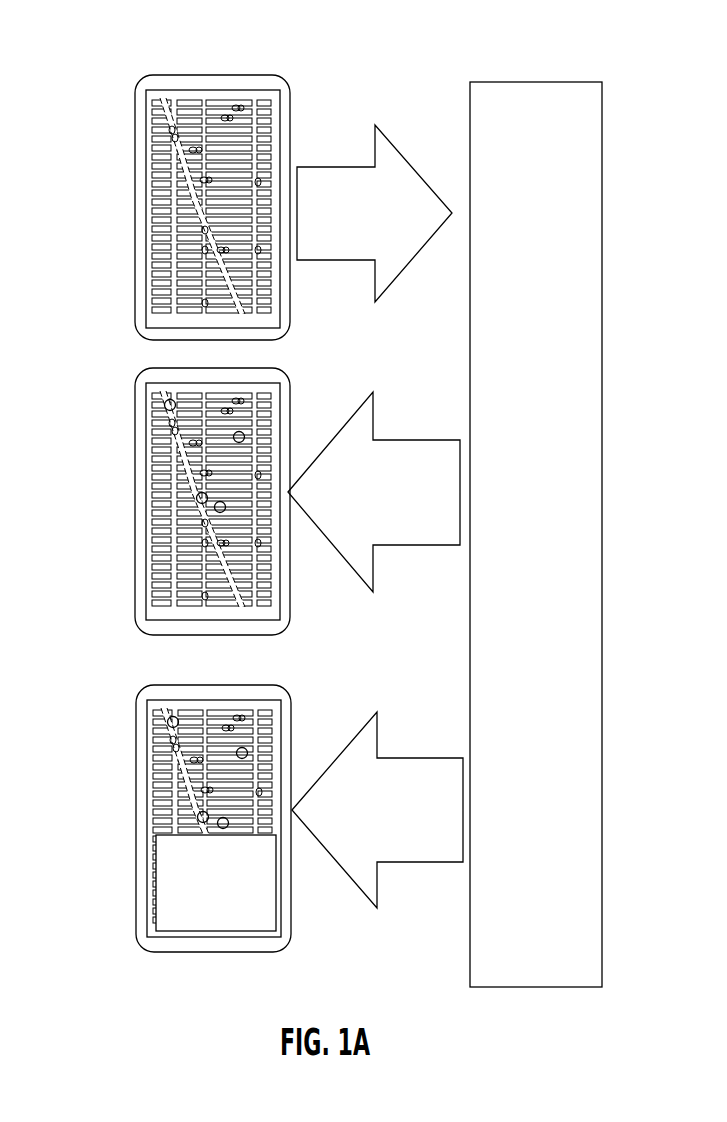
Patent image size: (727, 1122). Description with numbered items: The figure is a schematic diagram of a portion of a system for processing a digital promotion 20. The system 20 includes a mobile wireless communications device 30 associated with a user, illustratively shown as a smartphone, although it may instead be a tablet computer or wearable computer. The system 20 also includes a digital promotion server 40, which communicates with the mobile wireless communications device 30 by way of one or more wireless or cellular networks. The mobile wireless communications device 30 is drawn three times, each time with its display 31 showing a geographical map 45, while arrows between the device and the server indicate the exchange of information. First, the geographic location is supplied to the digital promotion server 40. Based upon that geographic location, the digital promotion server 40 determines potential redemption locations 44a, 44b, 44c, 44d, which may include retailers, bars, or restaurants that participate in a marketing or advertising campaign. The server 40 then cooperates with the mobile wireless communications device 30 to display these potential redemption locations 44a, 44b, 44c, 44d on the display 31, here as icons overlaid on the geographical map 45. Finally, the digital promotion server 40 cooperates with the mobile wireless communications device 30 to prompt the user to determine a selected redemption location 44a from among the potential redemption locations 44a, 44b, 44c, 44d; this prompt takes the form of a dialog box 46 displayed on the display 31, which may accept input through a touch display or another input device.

The system for processing a digital promotion 20 is at (283, 60).
The mobile wireless communications device 30 is at (165, 64).
The display 31 is at (146, 150).
The digital promotion server 40 is at (548, 56).
The potential redemption location 44a is at (123, 571).
The potential redemption location 44b is at (300, 568).
The potential redemption location 44c is at (146, 661).
The potential redemption location 44d is at (144, 537).
The geographical map 45 is at (248, 160).
The dialog box 46 is at (181, 901).